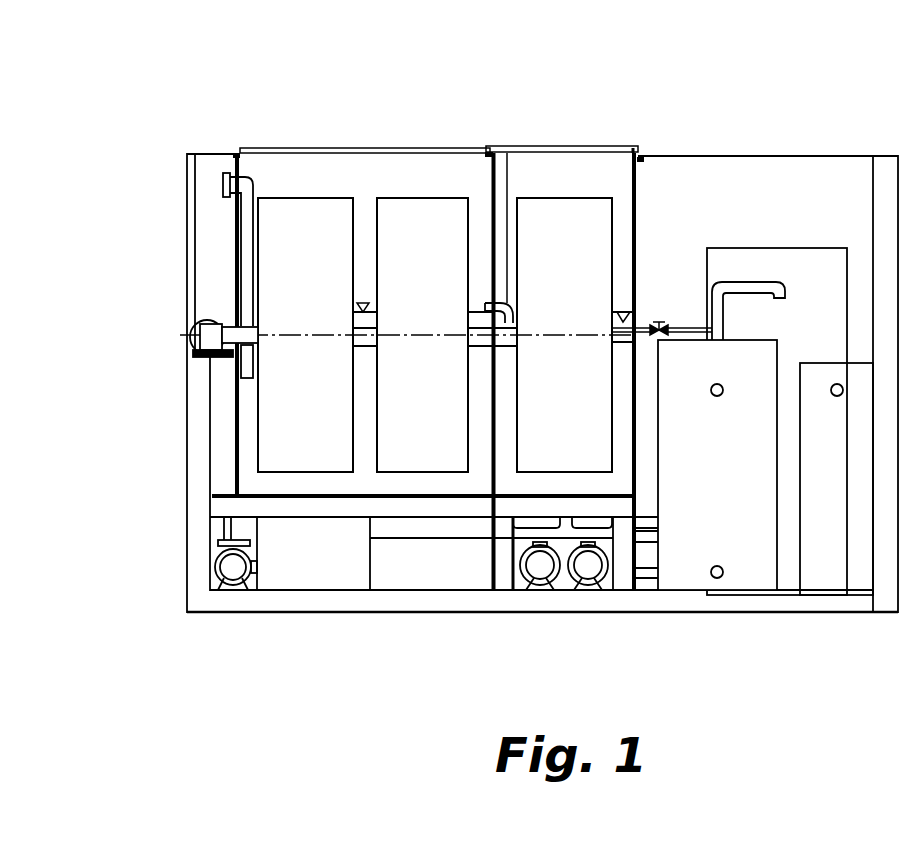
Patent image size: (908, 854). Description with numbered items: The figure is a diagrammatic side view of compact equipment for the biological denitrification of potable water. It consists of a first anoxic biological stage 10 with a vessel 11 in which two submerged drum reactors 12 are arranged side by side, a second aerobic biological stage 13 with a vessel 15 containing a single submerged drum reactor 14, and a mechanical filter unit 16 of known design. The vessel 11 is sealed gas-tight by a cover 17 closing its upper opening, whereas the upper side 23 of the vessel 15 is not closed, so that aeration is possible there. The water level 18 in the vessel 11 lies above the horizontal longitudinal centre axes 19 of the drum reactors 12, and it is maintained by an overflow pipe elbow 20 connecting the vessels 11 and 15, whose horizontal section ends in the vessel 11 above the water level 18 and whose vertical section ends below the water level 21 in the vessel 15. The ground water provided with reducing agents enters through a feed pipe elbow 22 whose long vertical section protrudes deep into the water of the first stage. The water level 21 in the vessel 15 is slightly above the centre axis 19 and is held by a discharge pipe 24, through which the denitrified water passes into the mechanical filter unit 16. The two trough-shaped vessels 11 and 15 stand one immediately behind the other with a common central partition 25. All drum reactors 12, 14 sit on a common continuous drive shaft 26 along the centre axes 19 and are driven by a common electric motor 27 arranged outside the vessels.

The first anoxic biological stage 10 is at (258, 130).
The vessel 11 is at (245, 450).
The submerged drum reactors 12 is at (397, 379).
The second aerobic biological stage 13 is at (534, 135).
The submerged drum reactor 14 is at (573, 270).
The vessel 15 is at (615, 480).
The mechanical filter unit 16 is at (767, 278).
The cover 17 is at (297, 148).
The water level 18 is at (487, 304).
The horizontal longitudinal centre axes 19 is at (430, 335).
The overflow pipe elbow 20 is at (505, 306).
The water level 21 is at (623, 311).
The feed pipe elbow 22 is at (247, 195).
The upper side 23 is at (620, 150).
The discharge pipe 24 is at (672, 323).
The common central partition 25 is at (490, 477).
The drive shaft 26 is at (247, 330).
The electric motor 27 is at (198, 339).